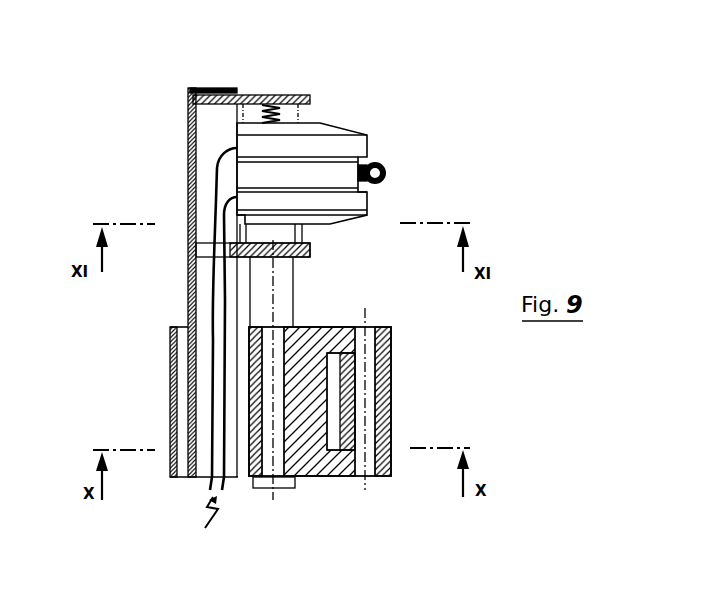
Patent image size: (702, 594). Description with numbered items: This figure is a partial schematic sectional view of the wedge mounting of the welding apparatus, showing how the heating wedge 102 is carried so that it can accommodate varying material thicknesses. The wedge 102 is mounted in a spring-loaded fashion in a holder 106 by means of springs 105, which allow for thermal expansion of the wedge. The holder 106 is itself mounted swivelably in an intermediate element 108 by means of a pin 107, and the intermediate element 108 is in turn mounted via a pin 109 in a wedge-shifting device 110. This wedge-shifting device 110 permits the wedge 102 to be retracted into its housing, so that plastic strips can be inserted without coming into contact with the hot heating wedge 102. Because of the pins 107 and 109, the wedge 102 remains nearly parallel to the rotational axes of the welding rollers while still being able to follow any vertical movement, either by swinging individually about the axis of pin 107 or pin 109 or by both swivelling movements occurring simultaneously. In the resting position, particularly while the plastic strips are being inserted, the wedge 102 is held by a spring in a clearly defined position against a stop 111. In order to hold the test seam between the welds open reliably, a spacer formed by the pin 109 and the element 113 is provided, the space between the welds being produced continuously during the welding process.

The wedge 102 is at (345, 149).
The springs 105 is at (275, 121).
The holder 106 is at (188, 137).
The pin 107 is at (277, 351).
The intermediate element 108 is at (314, 455).
The pin 109 is at (368, 465).
The wedge-shifting device 110 is at (383, 378).
The stop 111 is at (170, 378).
The spacer 113 is at (387, 176).